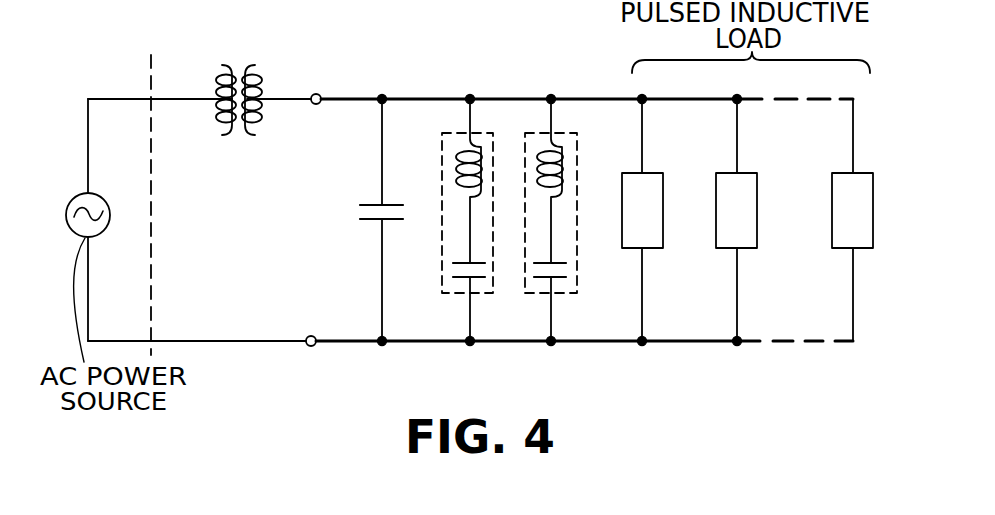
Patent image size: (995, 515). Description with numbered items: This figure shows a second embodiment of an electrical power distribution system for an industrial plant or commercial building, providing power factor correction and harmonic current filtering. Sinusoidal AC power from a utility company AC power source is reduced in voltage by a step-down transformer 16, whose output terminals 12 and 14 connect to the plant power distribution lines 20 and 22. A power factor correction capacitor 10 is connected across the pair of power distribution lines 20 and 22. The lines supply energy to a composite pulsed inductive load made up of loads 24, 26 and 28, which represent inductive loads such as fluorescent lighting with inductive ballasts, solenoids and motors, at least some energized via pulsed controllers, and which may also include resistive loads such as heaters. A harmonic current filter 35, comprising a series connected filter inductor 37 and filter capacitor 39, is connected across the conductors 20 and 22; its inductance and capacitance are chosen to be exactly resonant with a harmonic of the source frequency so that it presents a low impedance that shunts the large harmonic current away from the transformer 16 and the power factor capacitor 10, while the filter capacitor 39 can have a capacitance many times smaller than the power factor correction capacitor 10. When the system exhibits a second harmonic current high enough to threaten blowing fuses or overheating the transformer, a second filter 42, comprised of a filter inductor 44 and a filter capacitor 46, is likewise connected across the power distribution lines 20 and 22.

The power factor correction capacitor 10 is at (360, 212).
The output terminal 12 is at (320, 95).
The output terminal 14 is at (314, 345).
The step-down transformer 16 is at (226, 82).
The power distribution line 20 is at (428, 343).
The power distribution line 22 is at (440, 97).
The load 24 is at (658, 226).
The load 26 is at (752, 226).
The load 28 is at (868, 226).
The harmonic current filter 35 is at (440, 222).
The filter inductor 37 is at (456, 158).
The filter capacitor 39 is at (453, 268).
The second filter 42 is at (577, 232).
The filter inductor 44 is at (565, 162).
The filter capacitor 46 is at (568, 273).